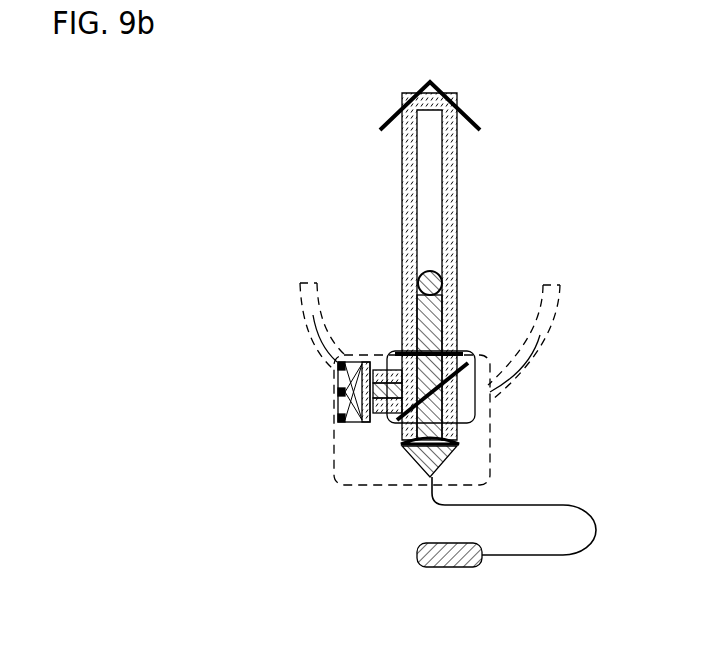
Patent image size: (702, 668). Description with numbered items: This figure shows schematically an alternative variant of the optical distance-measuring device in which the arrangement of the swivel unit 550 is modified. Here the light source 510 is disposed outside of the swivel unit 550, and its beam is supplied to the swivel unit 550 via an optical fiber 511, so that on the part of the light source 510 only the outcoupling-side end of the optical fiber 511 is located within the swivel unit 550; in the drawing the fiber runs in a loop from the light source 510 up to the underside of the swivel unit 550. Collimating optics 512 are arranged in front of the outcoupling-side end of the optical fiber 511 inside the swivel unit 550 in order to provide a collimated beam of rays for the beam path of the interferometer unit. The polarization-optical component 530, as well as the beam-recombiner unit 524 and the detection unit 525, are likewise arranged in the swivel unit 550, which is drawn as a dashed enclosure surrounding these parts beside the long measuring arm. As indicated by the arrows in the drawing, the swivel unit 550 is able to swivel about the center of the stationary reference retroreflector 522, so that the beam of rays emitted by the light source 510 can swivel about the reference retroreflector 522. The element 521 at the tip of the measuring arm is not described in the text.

The light source 510 is at (468, 567).
The optical fiber 511 is at (547, 503).
The collimating optics 512 is at (405, 453).
The probe housing with tip 521 is at (434, 84).
The stationary reference retroreflector 522 is at (443, 272).
The beam-recombiner unit 524 is at (368, 355).
The detection unit 525 is at (346, 340).
The polarization-optical component 530 is at (476, 405).
The swivel unit 550 is at (334, 463).